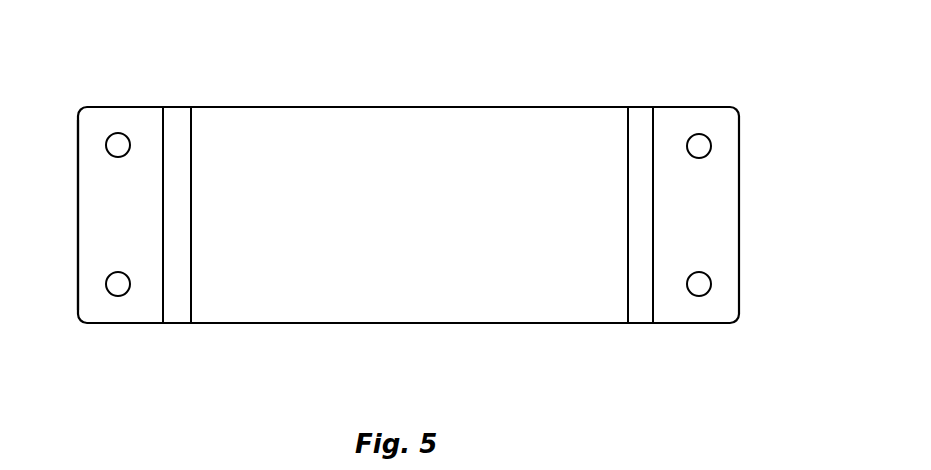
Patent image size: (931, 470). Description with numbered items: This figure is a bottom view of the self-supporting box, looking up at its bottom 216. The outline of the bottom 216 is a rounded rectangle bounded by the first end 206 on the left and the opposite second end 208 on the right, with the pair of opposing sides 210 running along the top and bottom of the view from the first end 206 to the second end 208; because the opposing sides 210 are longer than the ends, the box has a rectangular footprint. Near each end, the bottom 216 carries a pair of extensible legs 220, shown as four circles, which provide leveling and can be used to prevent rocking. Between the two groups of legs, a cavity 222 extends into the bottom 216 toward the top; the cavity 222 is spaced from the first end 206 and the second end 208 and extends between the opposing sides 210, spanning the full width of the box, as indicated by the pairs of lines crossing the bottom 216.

The first end 206 is at (78, 204).
The second end 208 is at (739, 205).
The opposing sides 210 is at (289, 106).
The bottom 216 is at (107, 117).
The extensible legs 220 is at (106, 145).
The cavity 222 is at (422, 122).